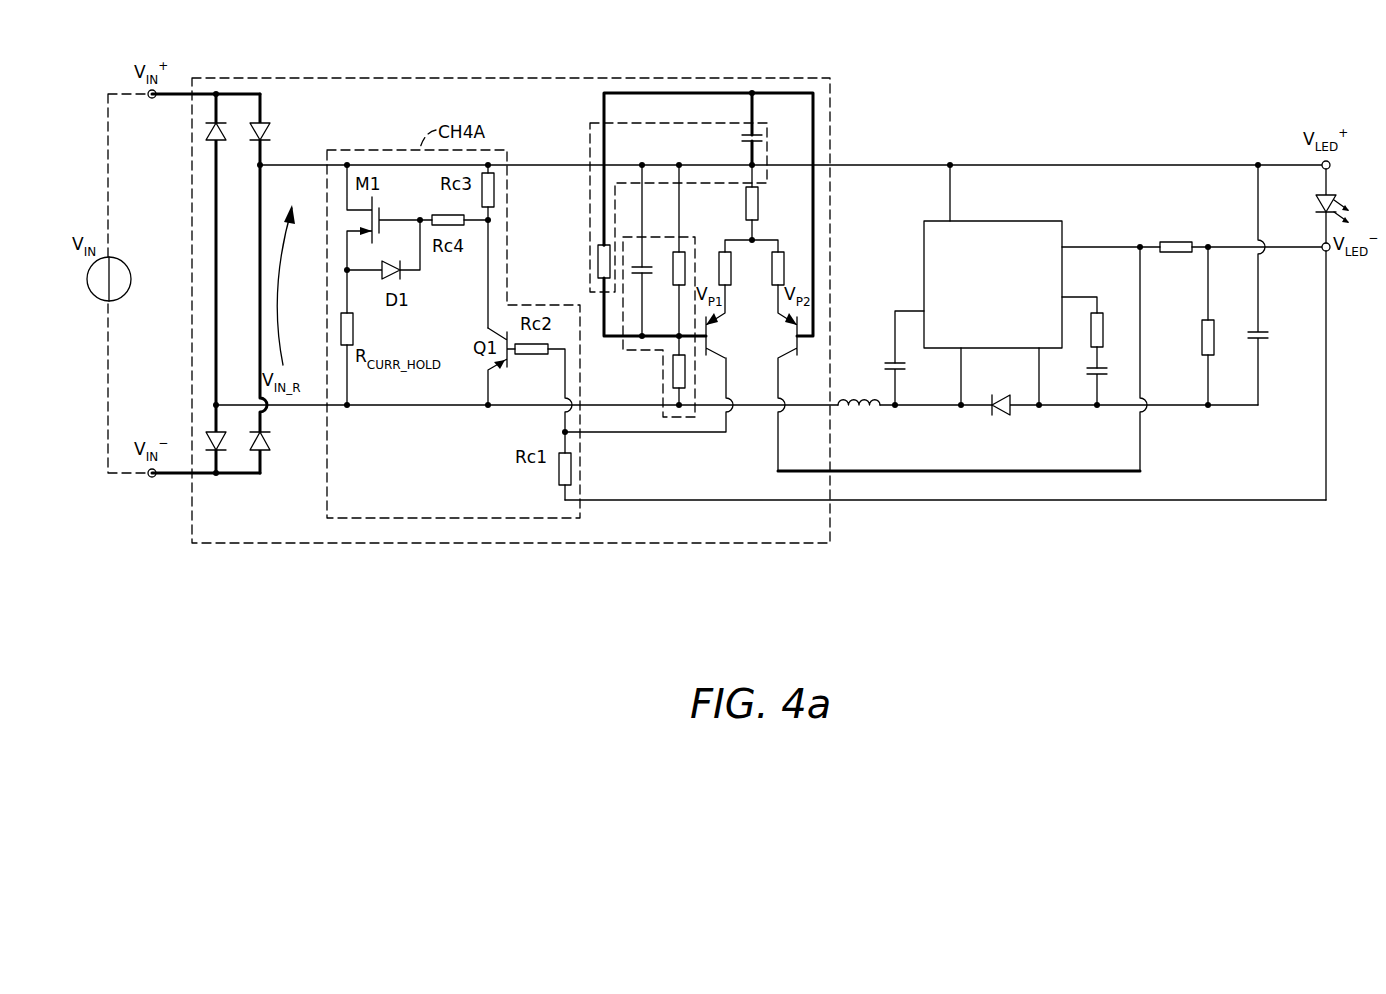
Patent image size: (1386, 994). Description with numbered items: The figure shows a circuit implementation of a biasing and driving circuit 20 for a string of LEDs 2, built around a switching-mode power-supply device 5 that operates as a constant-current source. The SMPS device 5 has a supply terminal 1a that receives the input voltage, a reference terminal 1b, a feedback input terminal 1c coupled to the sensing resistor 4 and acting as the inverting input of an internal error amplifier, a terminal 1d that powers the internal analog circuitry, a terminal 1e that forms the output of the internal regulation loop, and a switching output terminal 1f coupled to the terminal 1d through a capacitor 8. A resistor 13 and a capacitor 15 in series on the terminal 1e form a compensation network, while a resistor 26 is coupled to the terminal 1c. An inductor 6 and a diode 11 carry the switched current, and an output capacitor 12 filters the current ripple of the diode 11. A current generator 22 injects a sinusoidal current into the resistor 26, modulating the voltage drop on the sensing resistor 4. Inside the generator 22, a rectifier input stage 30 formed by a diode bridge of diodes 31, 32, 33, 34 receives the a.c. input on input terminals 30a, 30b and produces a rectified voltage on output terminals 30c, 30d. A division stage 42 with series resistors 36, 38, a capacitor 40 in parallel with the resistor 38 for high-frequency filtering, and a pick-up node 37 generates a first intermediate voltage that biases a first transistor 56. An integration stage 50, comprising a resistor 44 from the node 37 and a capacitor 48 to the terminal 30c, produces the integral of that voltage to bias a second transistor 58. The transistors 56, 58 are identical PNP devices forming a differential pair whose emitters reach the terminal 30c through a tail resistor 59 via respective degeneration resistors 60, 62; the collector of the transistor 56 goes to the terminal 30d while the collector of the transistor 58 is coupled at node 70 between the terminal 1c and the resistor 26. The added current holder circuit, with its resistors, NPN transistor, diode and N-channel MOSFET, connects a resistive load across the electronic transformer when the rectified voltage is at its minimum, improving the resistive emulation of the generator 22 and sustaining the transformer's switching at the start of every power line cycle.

The string of LEDs 2 is at (1322, 198).
The sensing resistor 4 is at (1214, 325).
The SMPS device 5 is at (1007, 232).
The inductor 6 is at (855, 400).
The capacitor 8 is at (898, 360).
The diode 11 is at (1000, 414).
The output capacitor 12 is at (1264, 330).
The resistor 13 is at (1098, 312).
The capacitor 15 is at (1091, 373).
The biasing and driving circuit 20 is at (985, 118).
The current generator 22 is at (727, 78).
The resistor 26 is at (1175, 255).
The rectifier input stage 30 is at (227, 273).
The input terminal 30a is at (216, 92).
The input terminal 30b is at (218, 476).
The output terminal 30c is at (262, 163).
The output terminal 30d is at (218, 403).
The diode 31 is at (205, 132).
The diode 32 is at (268, 118).
The diode 33 is at (210, 430).
The diode 34 is at (270, 443).
The resistor 36 is at (672, 372).
The node 37 is at (677, 334).
The resistor 38 is at (676, 266).
The capacitor 40 is at (650, 275).
The division stage 42 is at (679, 420).
The resistor 44 is at (597, 262).
The capacitor 48 is at (748, 140).
The integration stage 50 is at (620, 124).
The first transistor 56 is at (720, 350).
The second transistor 58 is at (787, 354).
The tail resistor 59 is at (760, 206).
The degeneration resistor 60 is at (731, 272).
The degeneration resistor 62 is at (785, 270).
The node 70 is at (1140, 245).
The supply terminal 1a is at (948, 218).
The reference terminal 1b is at (1037, 358).
The feedback input terminal 1c is at (1064, 247).
The terminal 1d is at (920, 311).
The terminal 1e is at (1064, 297).
The terminal 1f is at (959, 358).